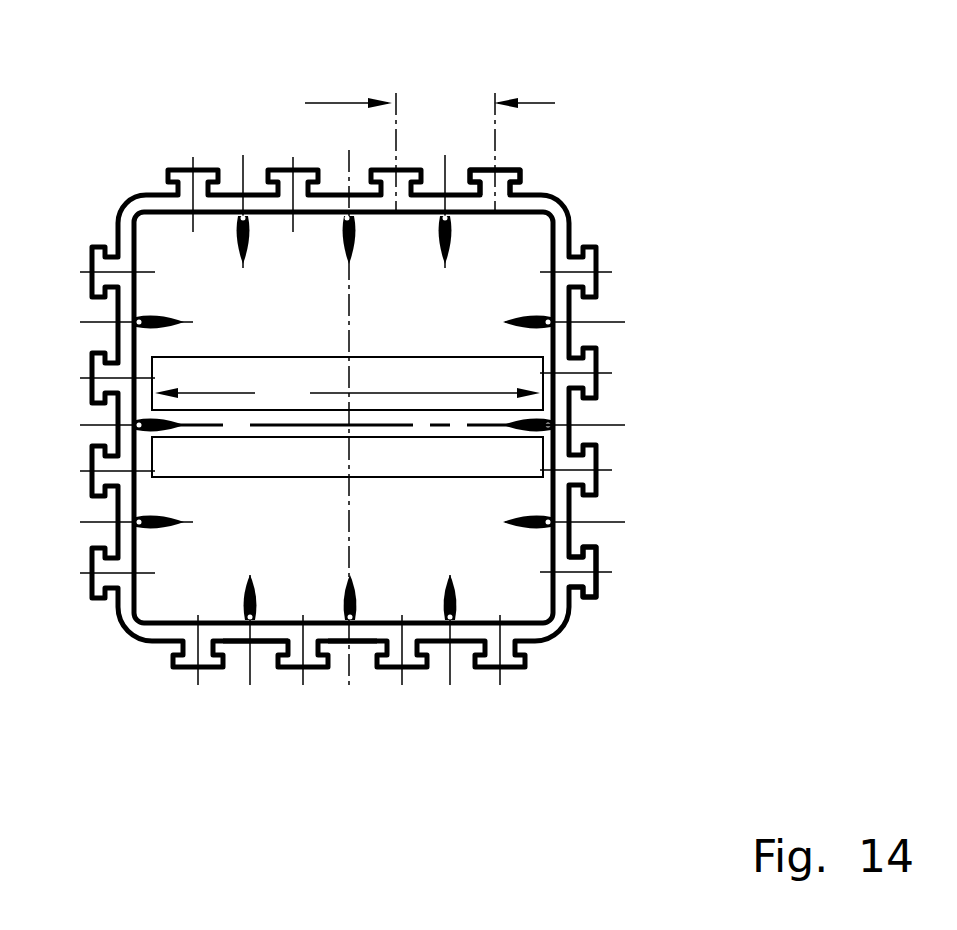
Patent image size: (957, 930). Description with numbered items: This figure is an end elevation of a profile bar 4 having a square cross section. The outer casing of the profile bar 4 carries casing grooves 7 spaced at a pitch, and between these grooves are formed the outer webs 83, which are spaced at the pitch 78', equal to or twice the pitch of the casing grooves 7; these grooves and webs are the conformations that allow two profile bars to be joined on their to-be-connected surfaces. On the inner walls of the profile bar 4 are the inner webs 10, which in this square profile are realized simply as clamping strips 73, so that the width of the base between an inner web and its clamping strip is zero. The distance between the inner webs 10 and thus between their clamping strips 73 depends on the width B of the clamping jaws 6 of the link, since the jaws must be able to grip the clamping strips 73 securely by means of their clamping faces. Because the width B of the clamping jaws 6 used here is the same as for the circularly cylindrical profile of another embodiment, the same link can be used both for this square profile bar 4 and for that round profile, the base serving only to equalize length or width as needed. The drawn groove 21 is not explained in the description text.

The profile bar 4 is at (576, 201).
The clamping jaws 6 is at (410, 368).
The casing grooves 7 is at (268, 653).
The inner webs 10 is at (515, 515).
The groove 21 is at (362, 662).
The clamping strips 73 is at (528, 522).
The outer webs 83 is at (520, 174).
The pitch 78' is at (430, 93).
The width B is at (347, 392).